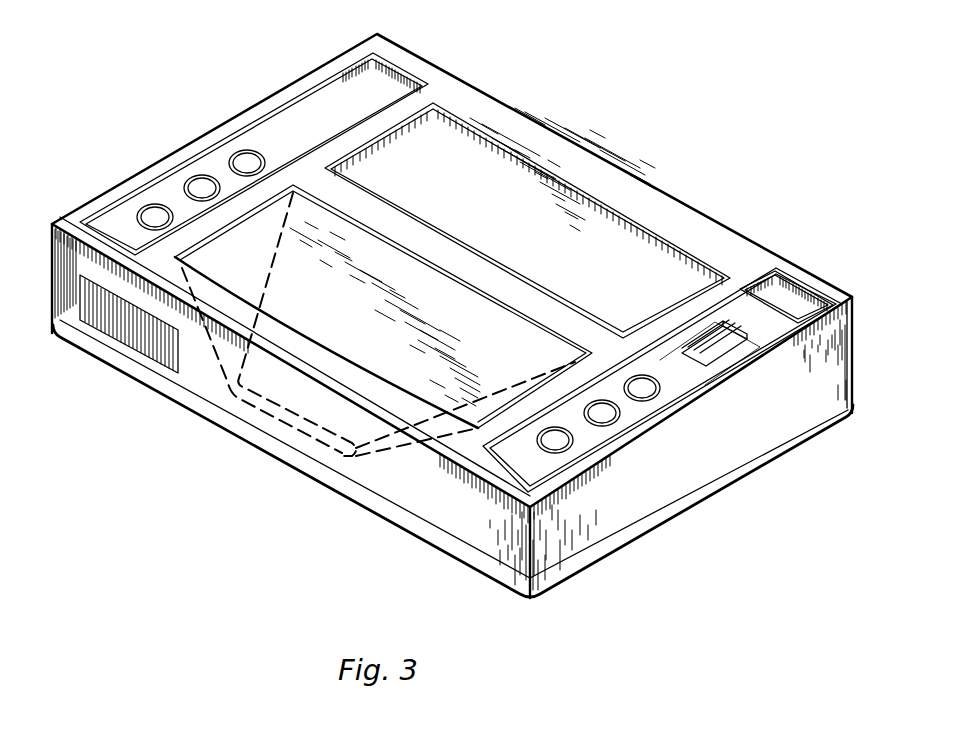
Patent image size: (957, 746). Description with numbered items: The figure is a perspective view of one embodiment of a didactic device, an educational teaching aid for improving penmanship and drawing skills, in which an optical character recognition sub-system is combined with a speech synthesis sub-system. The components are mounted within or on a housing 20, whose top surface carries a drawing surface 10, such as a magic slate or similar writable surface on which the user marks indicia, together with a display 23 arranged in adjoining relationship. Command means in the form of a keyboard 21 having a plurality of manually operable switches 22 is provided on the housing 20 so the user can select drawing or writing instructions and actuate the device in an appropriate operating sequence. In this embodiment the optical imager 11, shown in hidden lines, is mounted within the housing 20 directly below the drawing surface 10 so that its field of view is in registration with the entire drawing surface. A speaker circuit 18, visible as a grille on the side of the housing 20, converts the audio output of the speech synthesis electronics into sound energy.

The drawing surface 10 is at (437, 373).
The optical imager 11 is at (283, 413).
The speaker circuit 18 is at (133, 336).
The housing 20 is at (572, 533).
The keyboard 21 is at (172, 198).
The manually operable switches 22 is at (248, 160).
The display 23 is at (527, 180).